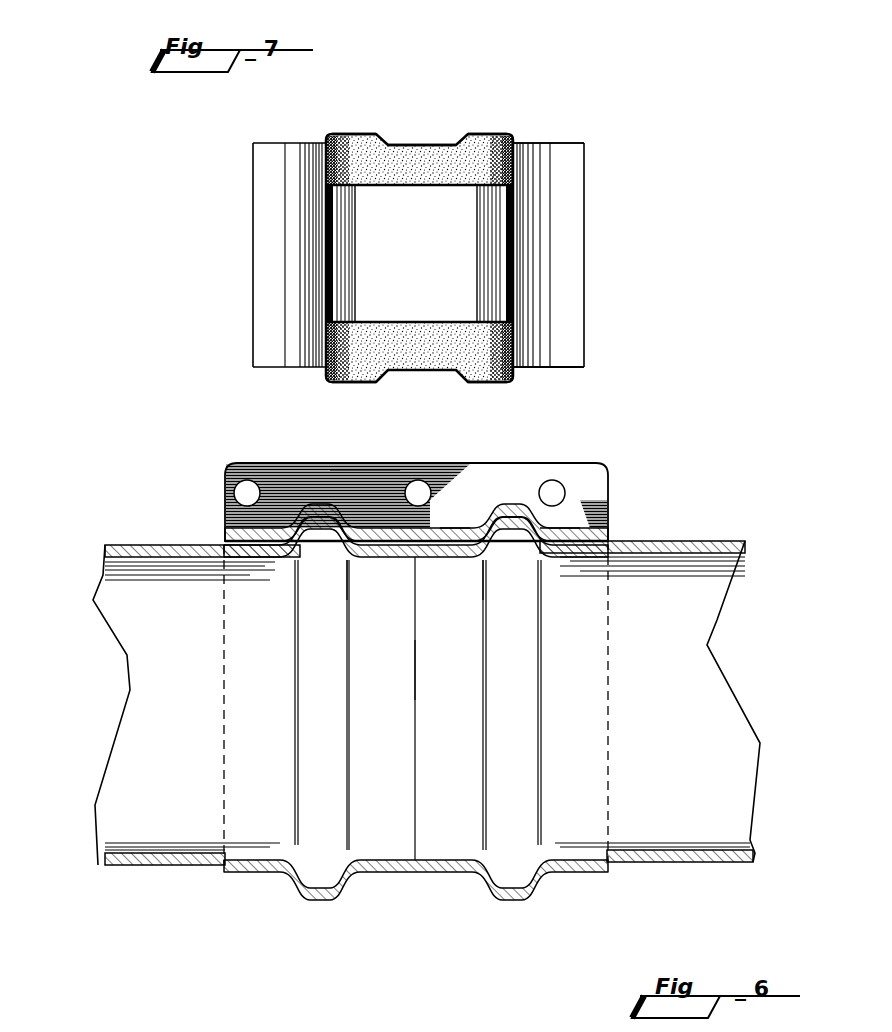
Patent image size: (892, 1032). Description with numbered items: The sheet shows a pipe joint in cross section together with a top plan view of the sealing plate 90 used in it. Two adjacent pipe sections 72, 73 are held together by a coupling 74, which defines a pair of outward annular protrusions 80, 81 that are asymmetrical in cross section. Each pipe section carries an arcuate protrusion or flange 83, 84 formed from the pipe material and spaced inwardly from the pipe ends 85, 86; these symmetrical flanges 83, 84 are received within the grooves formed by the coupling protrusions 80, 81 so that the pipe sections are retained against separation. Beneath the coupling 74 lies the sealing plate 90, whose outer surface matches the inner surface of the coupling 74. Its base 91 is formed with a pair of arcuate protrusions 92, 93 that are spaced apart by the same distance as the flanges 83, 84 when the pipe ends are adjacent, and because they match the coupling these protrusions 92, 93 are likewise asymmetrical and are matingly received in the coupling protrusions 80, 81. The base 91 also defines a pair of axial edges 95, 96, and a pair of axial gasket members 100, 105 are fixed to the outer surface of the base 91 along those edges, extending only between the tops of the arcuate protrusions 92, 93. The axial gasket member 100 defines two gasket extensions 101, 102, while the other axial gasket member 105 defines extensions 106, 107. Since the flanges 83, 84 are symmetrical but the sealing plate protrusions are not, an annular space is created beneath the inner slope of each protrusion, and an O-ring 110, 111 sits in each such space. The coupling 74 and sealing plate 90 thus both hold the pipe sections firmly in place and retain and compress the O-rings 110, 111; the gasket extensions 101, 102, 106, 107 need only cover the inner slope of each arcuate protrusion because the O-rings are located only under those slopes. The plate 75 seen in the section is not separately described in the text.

In FIG. 6, the pipe section 72 is at (668, 541).
In FIG. 6, the pipe section 73 is at (160, 545).
In FIG. 6, the coupling 74 is at (432, 528).
In FIG. 6, the clamp plate 75 is at (585, 470).
In FIG. 6, the outward annular protrusion 80 is at (505, 506).
In FIG. 6, the outward annular protrusion 81 is at (360, 502).
In FIG. 6, the arcuate protrusion or flange 83 is at (498, 535).
In FIG. 6, the arcuate protrusion or flange 84 is at (327, 537).
In FIG. 6, the pipe end 85 is at (415, 690).
In FIG. 6, the pipe end 86 is at (415, 670).
In FIG. 7, the sealing plate 90 is at (650, 188).
In FIG. 6, the sealing plate 90 is at (452, 527).
In FIG. 7, the base 91 is at (402, 266).
In FIG. 7, the arcuate protrusion 92 is at (532, 275).
In FIG. 6, the arcuate protrusion 92 is at (545, 520).
In FIG. 7, the arcuate protrusion 93 is at (304, 225).
In FIG. 6, the arcuate protrusion 93 is at (265, 463).
In FIG. 7, the axial edge 95 is at (563, 368).
In FIG. 7, the axial edge 96 is at (553, 143).
In FIG. 7, the axial gasket member 100 is at (425, 370).
In FIG. 7, the gasket extension 101 is at (360, 383).
In FIG. 7, the gasket extension 102 is at (495, 383).
In FIG. 7, the axial gasket member 105 is at (410, 143).
In FIG. 7, the gasket extension 106 is at (350, 134).
In FIG. 7, the gasket extension 107 is at (492, 134).
In FIG. 6, the O-ring 110 is at (488, 548).
In FIG. 6, the O-ring 111 is at (353, 545).